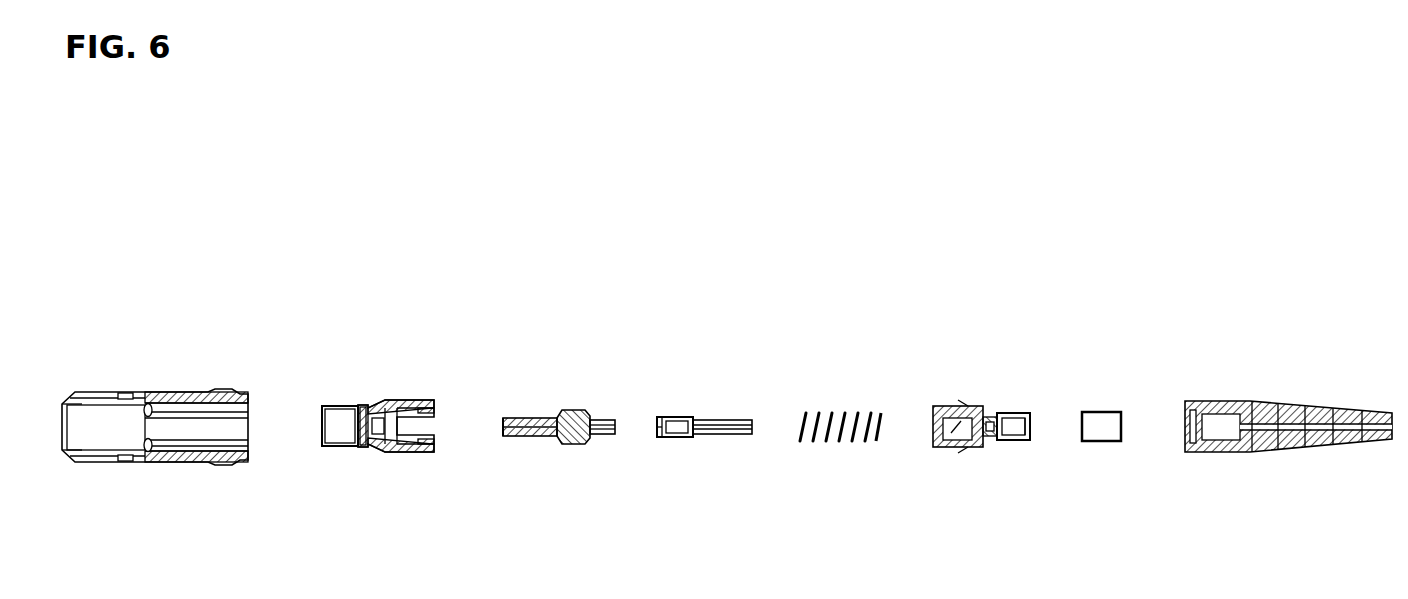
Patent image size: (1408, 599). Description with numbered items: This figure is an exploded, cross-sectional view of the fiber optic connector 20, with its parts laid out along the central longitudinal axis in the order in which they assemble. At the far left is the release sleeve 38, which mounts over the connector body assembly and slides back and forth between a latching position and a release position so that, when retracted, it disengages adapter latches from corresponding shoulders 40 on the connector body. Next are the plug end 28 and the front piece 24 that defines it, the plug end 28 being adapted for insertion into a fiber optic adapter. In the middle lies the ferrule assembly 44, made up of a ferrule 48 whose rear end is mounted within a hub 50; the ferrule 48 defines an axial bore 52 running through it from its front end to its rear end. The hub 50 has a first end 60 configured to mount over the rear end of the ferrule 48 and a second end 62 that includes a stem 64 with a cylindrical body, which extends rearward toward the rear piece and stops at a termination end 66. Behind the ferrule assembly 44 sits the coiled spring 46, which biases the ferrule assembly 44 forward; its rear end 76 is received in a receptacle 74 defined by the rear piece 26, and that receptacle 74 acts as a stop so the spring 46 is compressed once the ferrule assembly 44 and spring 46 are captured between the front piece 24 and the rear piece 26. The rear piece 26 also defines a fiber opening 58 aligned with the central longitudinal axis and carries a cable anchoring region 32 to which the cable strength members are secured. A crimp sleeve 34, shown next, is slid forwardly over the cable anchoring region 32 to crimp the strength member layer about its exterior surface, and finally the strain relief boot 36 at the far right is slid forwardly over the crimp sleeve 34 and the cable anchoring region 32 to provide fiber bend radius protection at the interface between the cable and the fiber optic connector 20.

The fiber optic connector 20 is at (851, 295).
The front piece 24 is at (387, 400).
The rear piece 26 is at (957, 406).
The plug end 28 is at (320, 437).
The cable anchoring region 32 is at (1020, 441).
The crimp sleeve 34 is at (1100, 412).
The strain relief boot 36 is at (1242, 401).
The release sleeve 38 is at (125, 464).
The shoulders 40 is at (362, 410).
The ferrule assembly 44 is at (549, 461).
The spring 46 is at (836, 442).
The ferrule 48 is at (512, 418).
The hub 50 is at (572, 410).
The axial bore 52 is at (503, 432).
The fiber opening 58 is at (1027, 420).
The first end 60 is at (554, 440).
The second end 62 is at (616, 440).
The stem 64 is at (600, 420).
The termination end 66 is at (620, 418).
The receptacle 74 is at (953, 434).
The rear end 76 is at (880, 413).